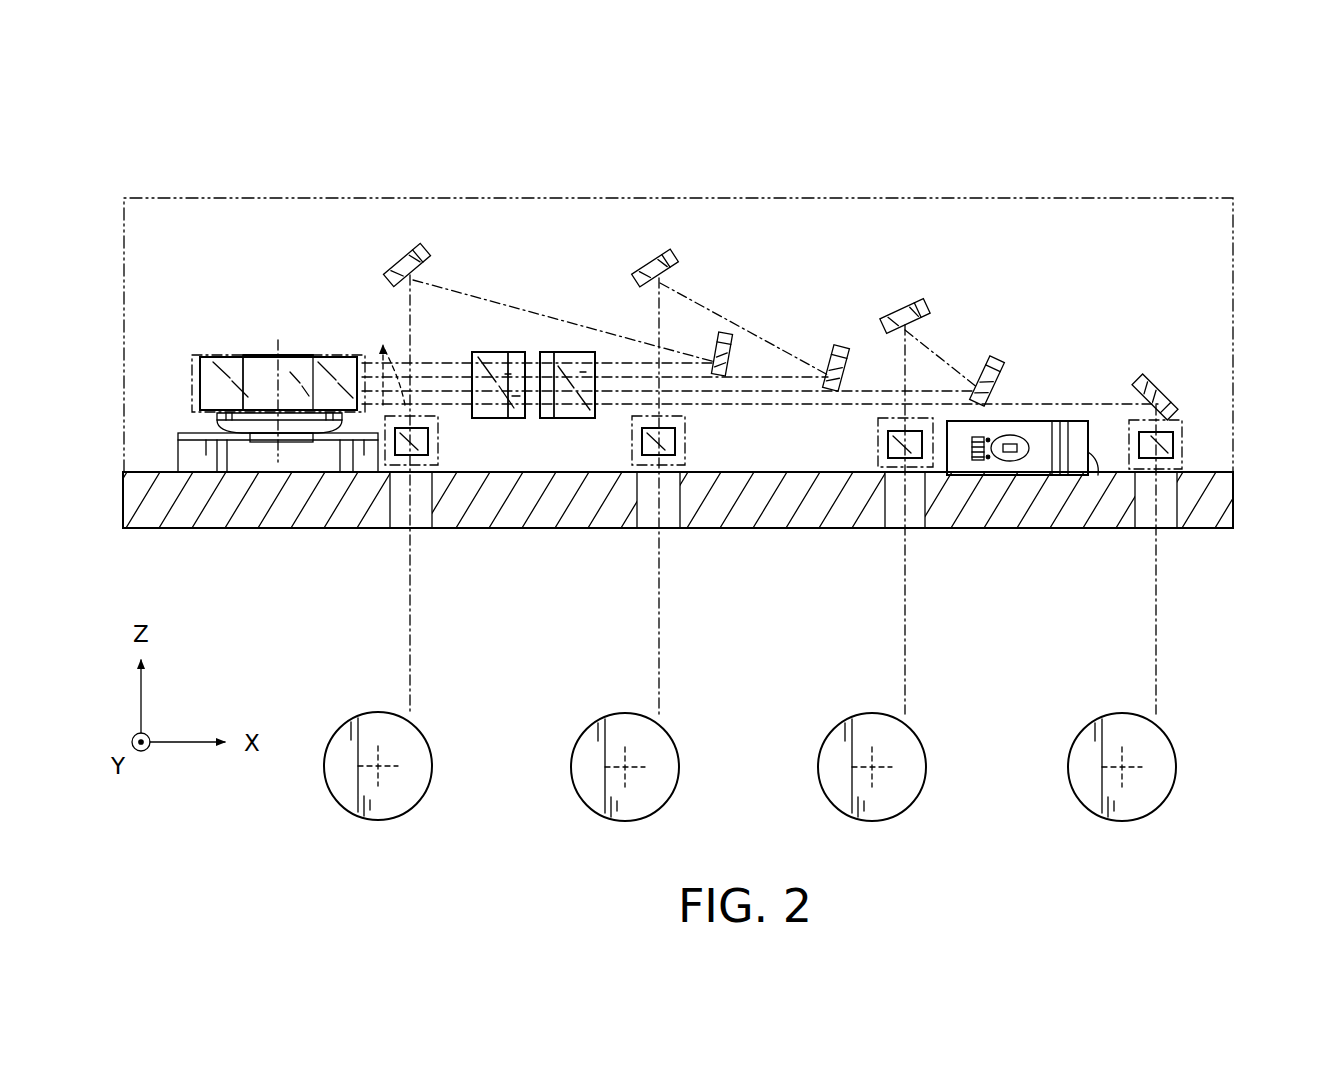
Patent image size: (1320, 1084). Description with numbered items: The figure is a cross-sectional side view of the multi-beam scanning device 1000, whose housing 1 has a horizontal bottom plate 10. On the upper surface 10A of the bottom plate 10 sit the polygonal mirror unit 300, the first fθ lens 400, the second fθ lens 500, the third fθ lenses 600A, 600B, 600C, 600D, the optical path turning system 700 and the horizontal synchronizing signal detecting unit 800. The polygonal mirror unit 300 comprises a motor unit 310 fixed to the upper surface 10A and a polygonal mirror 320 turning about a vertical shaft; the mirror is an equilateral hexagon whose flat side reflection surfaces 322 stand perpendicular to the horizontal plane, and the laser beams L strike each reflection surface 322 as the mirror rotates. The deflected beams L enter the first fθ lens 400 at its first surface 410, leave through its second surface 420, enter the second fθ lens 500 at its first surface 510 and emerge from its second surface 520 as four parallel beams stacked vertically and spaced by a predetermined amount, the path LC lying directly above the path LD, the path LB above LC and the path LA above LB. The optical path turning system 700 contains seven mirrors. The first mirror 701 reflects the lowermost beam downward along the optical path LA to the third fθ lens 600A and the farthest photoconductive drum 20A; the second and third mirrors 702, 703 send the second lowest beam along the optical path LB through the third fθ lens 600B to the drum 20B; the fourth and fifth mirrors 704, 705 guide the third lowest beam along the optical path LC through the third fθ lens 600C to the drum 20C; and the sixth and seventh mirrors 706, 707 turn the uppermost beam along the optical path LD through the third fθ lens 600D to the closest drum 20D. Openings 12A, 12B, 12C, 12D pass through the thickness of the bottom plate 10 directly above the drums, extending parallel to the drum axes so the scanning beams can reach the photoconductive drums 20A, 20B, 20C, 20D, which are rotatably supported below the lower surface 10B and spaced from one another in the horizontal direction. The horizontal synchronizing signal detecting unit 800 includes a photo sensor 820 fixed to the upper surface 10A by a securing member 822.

The multi-beam scanning device 1000 is at (1003, 155).
The housing 1 is at (1102, 198).
The bottom plate 10 is at (1205, 532).
The upper surface 10A is at (143, 470).
The lower surface 10B is at (1222, 530).
The opening 12A is at (1146, 507).
The opening 12B is at (896, 507).
The opening 12C is at (648, 507).
The opening 12D is at (402, 507).
The photoconductive drum 20A is at (1096, 724).
The photoconductive drum 20B is at (846, 724).
The photoconductive drum 20C is at (599, 724).
The photoconductive drum 20D is at (352, 722).
The polygonal mirror unit 300 is at (253, 296).
The motor unit 310 is at (190, 446).
The polygonal mirror 320 is at (326, 358).
The reflection surface 322 is at (215, 360).
The first fθ lens 400 is at (480, 330).
The first surface 410 is at (470, 355).
The second surface 420 is at (525, 418).
The second fθ lens 500 is at (566, 330).
The first surface 510 is at (552, 364).
The second surface 520 is at (597, 355).
The third fθ lens 600A is at (1178, 444).
The third fθ lens 600B is at (890, 448).
The third fθ lens 600C is at (678, 440).
The third fθ lens 600D is at (430, 440).
The optical path turning system 700 is at (1002, 280).
The first mirror 701 is at (1158, 394).
The second mirror 702 is at (993, 366).
The third mirror 703 is at (914, 307).
The fourth mirror 704 is at (836, 350).
The fifth mirror 705 is at (676, 266).
The sixth mirror 706 is at (716, 352).
The seventh mirror 707 is at (392, 266).
The horizontal synchronizing signal detecting unit 800 is at (1040, 386).
The photo sensor 820 is at (1012, 458).
The securing member 822 is at (1088, 462).
The laser beams L is at (388, 354).
The optical path LA is at (1125, 405).
The optical path LB is at (865, 392).
The optical path LC is at (768, 390).
The optical path LD is at (430, 362).